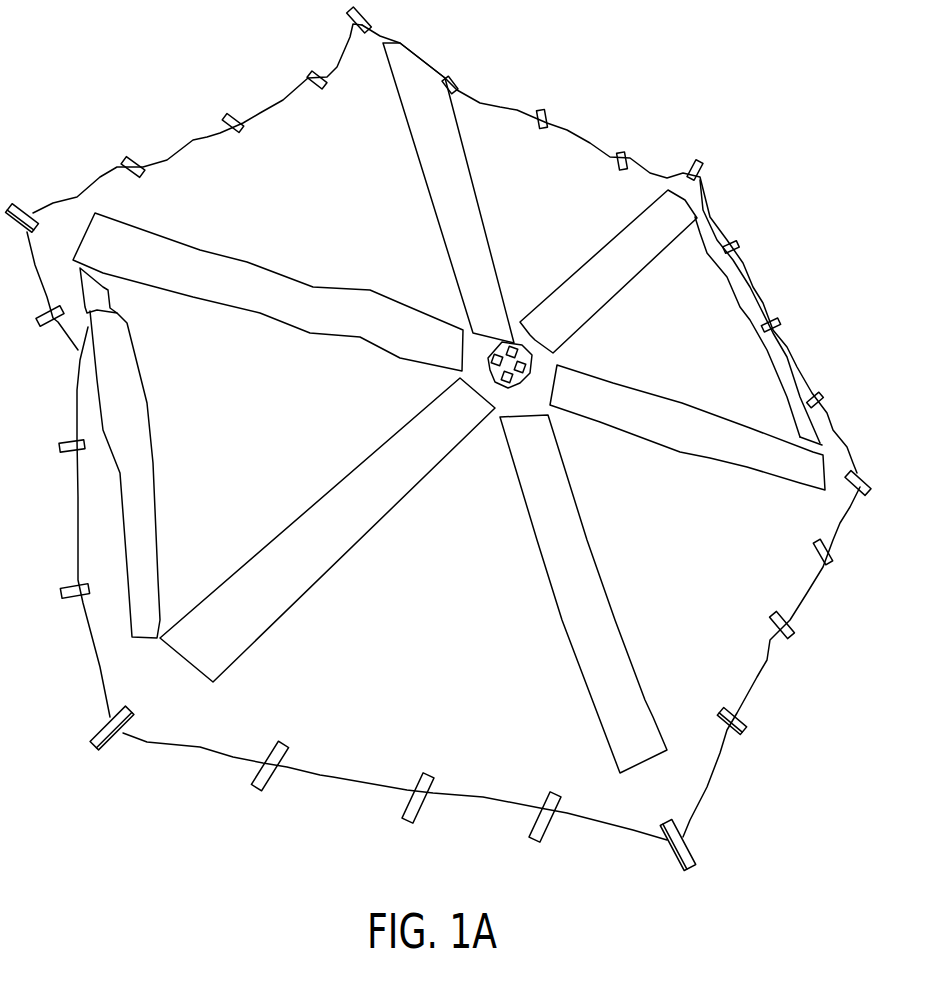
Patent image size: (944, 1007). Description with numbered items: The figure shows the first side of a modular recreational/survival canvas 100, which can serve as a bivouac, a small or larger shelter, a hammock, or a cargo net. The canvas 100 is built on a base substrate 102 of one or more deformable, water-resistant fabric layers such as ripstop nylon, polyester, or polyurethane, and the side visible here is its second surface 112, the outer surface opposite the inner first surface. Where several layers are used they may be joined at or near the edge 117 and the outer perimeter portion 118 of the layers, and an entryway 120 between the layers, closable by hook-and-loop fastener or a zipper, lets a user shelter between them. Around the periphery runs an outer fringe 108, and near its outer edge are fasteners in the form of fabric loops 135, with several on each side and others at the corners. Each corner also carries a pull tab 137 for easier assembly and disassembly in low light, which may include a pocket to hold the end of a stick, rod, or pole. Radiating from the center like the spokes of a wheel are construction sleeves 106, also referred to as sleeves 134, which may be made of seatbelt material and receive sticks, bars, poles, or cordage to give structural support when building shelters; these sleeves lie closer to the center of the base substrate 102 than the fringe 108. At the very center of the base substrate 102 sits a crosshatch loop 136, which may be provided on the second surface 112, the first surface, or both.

The modular recreational/survival canvas 100 is at (840, 209).
The base substrate 102 is at (218, 180).
The construction sleeves 106 is at (687, 440).
The sleeves 134 is at (707, 440).
The outer fringe 108 is at (143, 742).
The second surface 112 is at (700, 647).
The edge 117 is at (822, 422).
The outer perimeter portion 118 is at (838, 354).
The entryway 120 is at (133, 473).
The fabric loops 135 is at (123, 163).
The crosshatch loop 136 is at (512, 340).
The pull tab 137 is at (702, 168).